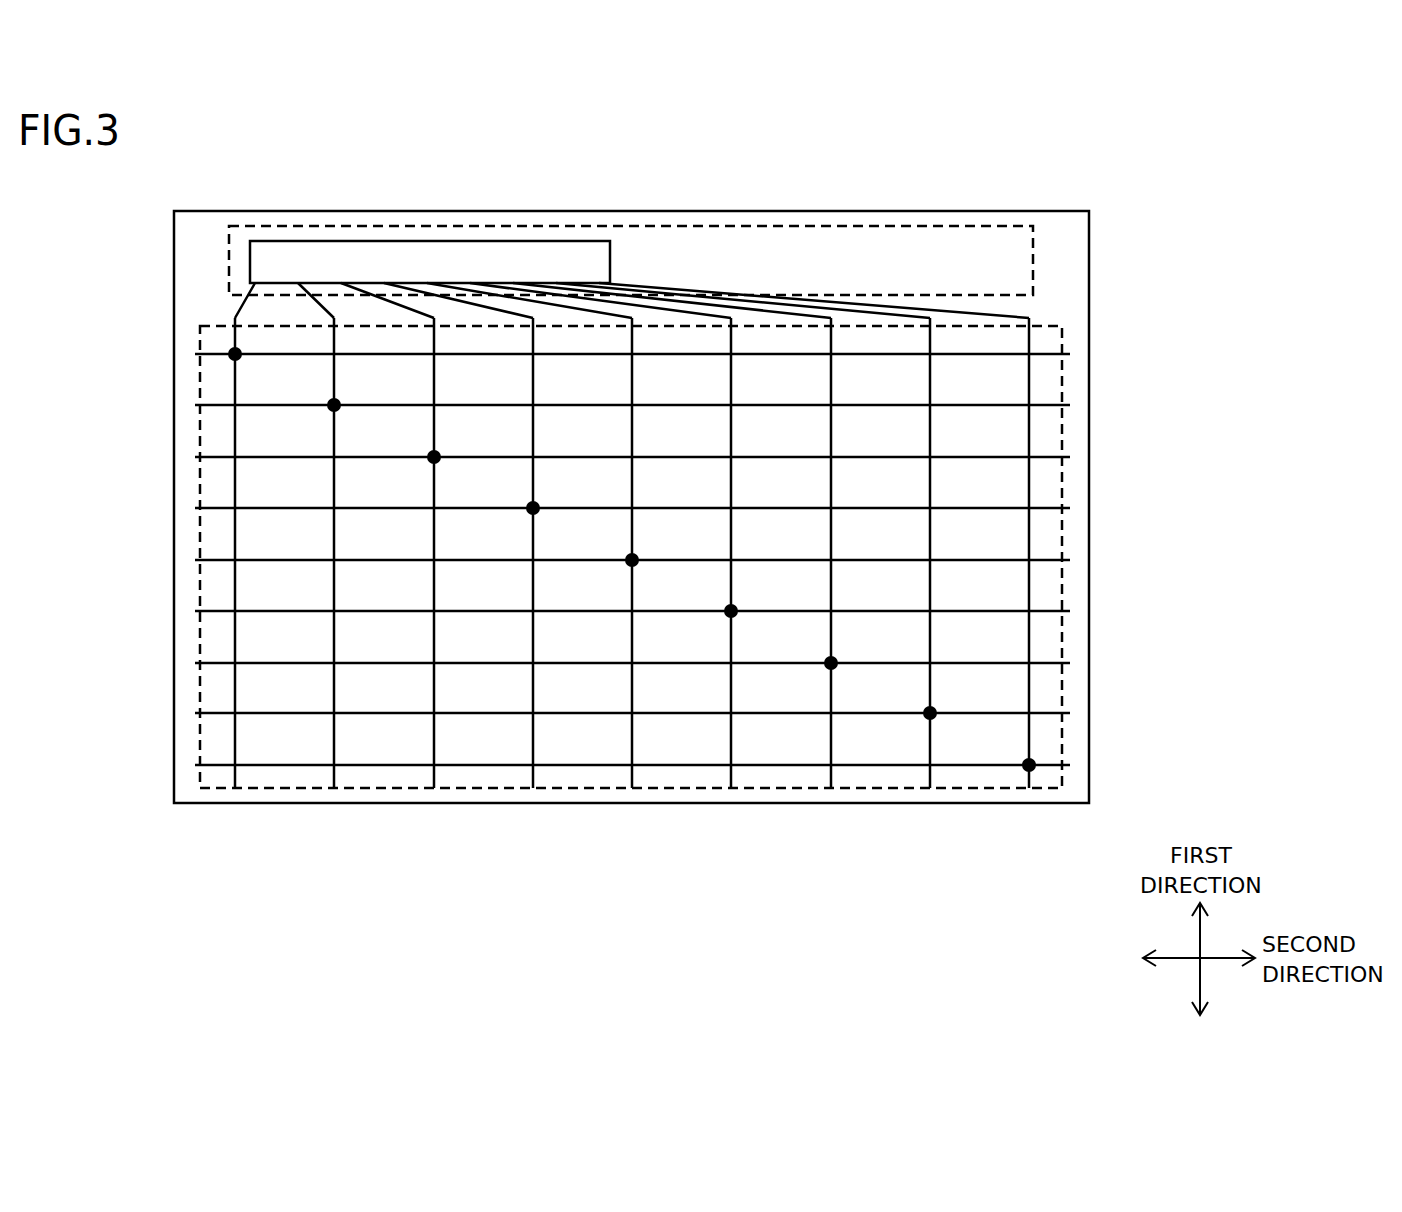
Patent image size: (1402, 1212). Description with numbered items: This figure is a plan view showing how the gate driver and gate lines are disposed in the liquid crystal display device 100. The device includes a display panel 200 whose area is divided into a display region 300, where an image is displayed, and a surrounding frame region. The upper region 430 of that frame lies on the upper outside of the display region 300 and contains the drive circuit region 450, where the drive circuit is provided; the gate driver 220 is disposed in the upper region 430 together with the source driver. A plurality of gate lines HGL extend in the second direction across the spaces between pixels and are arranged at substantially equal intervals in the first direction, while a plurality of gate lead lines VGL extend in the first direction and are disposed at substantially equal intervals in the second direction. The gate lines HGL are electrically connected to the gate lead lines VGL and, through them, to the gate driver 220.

The liquid crystal display device 100 is at (1143, 195).
The display panel 200 is at (1089, 410).
The gate driver 220 is at (495, 240).
The display region 300 is at (1063, 532).
The upper region 430 is at (627, 223).
The drive circuit region 450 is at (809, 225).
The gate lead lines VGL is at (233, 645).
The gate lines HGL is at (223, 713).